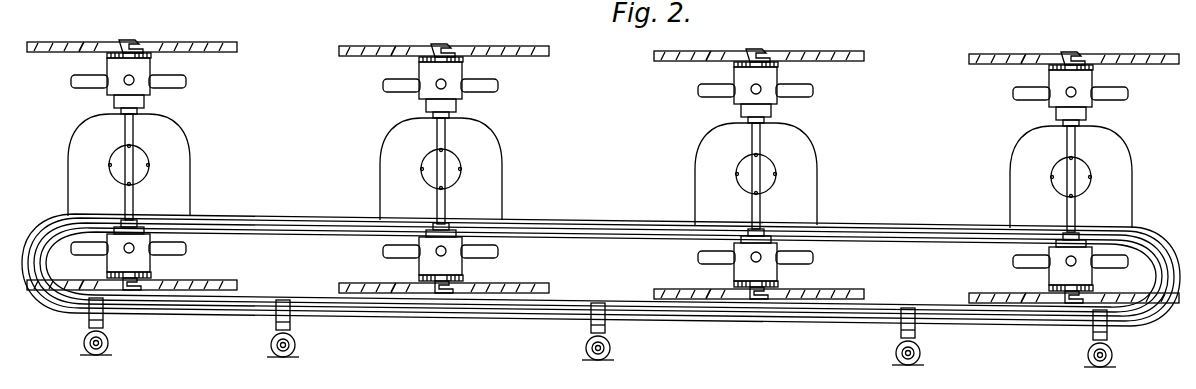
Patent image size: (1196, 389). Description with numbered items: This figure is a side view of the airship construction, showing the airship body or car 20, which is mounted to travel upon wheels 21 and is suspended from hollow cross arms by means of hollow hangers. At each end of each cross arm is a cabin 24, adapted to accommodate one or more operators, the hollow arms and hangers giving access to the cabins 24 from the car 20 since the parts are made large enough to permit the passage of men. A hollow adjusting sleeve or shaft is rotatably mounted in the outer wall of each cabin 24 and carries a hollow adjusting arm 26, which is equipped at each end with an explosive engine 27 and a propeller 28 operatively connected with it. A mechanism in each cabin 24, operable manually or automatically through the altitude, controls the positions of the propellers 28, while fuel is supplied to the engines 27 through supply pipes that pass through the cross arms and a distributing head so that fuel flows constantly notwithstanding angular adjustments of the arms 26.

The airship body or car 20 is at (601, 270).
The wheels 21 is at (110, 348).
The cabin 24 is at (182, 200).
The hollow adjusting arm 26 is at (133, 130).
The explosive engine 27 is at (157, 82).
The propeller 28 is at (190, 50).